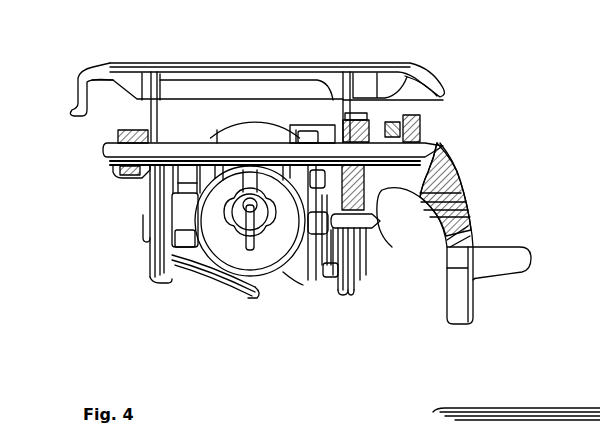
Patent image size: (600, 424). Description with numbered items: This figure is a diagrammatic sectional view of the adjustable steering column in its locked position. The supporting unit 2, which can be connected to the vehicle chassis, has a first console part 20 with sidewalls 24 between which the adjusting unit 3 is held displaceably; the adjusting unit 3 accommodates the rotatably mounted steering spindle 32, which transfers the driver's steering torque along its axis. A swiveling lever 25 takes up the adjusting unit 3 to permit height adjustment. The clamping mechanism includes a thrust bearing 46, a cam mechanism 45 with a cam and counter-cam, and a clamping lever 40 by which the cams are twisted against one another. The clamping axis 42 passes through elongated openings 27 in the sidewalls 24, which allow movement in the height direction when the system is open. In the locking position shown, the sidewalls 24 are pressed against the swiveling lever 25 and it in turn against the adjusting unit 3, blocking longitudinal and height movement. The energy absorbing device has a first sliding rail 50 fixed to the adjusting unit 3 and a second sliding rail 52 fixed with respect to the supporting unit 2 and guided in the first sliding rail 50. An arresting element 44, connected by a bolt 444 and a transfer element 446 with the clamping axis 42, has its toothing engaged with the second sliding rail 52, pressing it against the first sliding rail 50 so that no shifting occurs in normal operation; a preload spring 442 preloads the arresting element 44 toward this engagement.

The supporting unit 2 is at (367, 83).
The adjusting unit 3 is at (265, 268).
The first console part 20 is at (237, 93).
The sidewalls 24 is at (146, 232).
The swiveling lever 25 is at (160, 278).
The openings 27 is at (355, 104).
The steering spindle 32 is at (245, 262).
The clamping lever 40 is at (460, 293).
The clamping axis 42 is at (432, 150).
The arresting element 44 is at (333, 265).
The cam mechanism 45 is at (462, 181).
The thrust bearing 46 is at (140, 178).
The first sliding rail 50 is at (302, 268).
The second sliding rail 52 is at (321, 265).
The preload spring 442 is at (345, 253).
The bolt 444 is at (382, 230).
The transfer element 446 is at (420, 122).